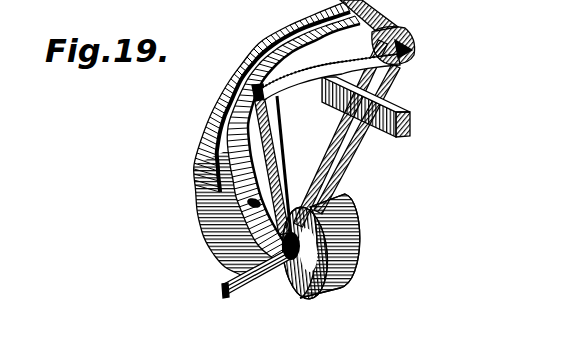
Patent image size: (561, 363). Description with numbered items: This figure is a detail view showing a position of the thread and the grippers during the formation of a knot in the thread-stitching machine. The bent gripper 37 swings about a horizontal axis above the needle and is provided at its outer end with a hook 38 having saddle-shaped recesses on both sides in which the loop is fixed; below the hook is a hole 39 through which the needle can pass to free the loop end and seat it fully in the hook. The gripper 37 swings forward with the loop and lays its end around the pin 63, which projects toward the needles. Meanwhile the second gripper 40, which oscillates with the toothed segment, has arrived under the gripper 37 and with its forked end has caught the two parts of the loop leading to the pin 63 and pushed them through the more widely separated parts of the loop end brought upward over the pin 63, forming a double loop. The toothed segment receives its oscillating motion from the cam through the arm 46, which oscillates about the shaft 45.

The bent gripper 37 is at (202, 188).
The hook 38 is at (414, 56).
The hole 39 is at (205, 151).
The second gripper 40 is at (400, 111).
The shaft 45 is at (279, 167).
The arm 46 is at (341, 170).
The pin 63 is at (233, 294).